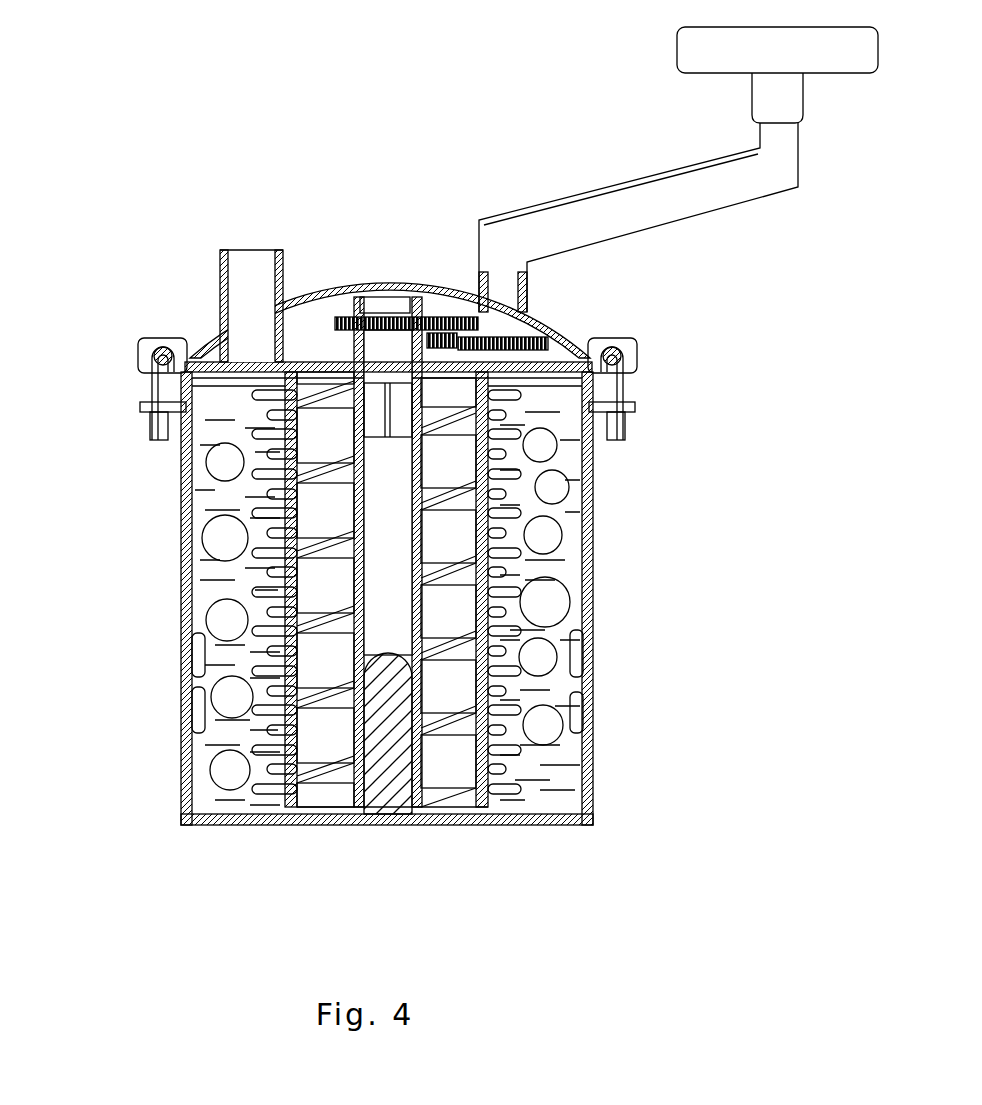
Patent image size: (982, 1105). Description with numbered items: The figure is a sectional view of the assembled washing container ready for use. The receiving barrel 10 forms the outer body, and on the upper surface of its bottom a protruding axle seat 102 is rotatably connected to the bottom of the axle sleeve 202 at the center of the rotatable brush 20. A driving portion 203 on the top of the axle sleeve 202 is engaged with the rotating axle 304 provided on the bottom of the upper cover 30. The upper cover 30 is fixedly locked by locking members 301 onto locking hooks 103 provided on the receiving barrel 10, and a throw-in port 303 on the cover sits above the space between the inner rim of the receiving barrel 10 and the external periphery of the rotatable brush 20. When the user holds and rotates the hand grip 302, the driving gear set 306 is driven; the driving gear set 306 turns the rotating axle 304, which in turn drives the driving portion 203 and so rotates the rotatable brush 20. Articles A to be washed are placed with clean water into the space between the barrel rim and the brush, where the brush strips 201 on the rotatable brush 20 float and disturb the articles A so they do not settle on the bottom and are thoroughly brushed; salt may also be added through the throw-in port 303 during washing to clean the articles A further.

The receiving barrel 10 is at (598, 570).
The rotatable brush 20 is at (297, 592).
The upper cover 30 is at (393, 276).
The protruding axle seat 102 is at (390, 790).
The locking hooks 103 is at (140, 405).
The brush strips 201 is at (508, 800).
The axle sleeve 202 is at (348, 735).
The driving portion 203 is at (475, 405).
The locking members 301 is at (148, 342).
The hand grip 302 is at (686, 218).
The throw-in port 303 is at (242, 293).
The rotating axle 304 is at (375, 390).
The driving gear set 306 is at (447, 298).
The articles to be washed A is at (212, 771).